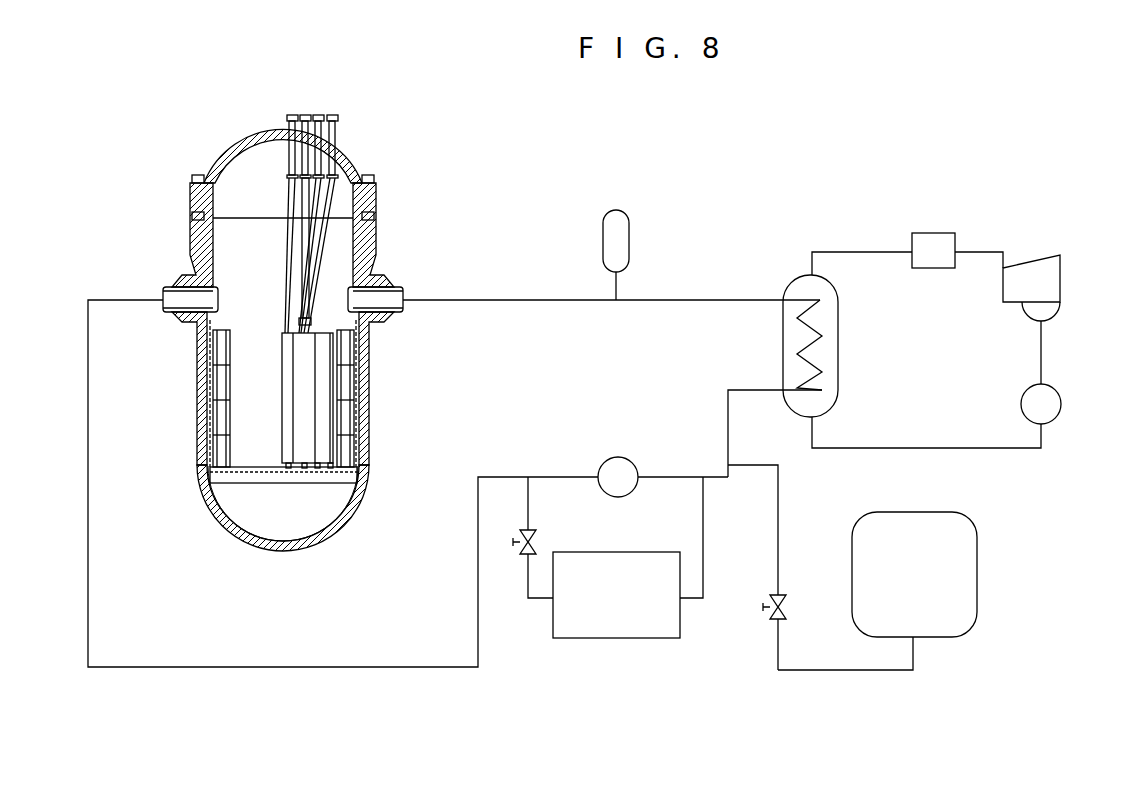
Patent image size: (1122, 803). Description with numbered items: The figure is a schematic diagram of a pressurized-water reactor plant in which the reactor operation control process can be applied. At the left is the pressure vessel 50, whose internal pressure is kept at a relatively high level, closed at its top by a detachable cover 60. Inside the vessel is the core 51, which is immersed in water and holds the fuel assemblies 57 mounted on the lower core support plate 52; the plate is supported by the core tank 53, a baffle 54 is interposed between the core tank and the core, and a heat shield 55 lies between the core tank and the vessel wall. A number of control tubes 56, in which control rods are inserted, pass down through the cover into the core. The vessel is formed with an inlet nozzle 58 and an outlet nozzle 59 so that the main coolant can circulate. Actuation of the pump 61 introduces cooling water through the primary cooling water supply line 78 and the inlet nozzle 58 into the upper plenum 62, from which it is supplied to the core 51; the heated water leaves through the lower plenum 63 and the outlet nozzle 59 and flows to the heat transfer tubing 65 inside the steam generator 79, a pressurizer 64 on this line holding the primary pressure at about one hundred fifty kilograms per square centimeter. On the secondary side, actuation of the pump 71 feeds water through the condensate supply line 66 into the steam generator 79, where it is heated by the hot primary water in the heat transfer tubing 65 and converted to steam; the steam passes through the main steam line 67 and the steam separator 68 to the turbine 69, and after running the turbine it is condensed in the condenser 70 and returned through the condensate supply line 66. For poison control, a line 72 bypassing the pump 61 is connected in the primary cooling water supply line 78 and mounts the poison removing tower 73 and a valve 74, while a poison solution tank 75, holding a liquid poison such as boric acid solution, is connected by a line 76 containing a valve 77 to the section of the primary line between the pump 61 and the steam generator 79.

The pressure vessel 50 is at (220, 523).
The core 51 is at (263, 429).
The lower core support plate 52 is at (257, 473).
The core tank 53 is at (367, 270).
The baffle 54 is at (210, 420).
The heat shield 55 is at (357, 417).
The control tubes 56 is at (285, 297).
The fuel assemblies 57 is at (303, 460).
The inlet nozzle 58 is at (170, 280).
The outlet nozzle 59 is at (400, 287).
The detachable cover 60 is at (355, 180).
The pump 61 is at (608, 460).
The upper plenum 62 is at (223, 235).
The lower plenum 63 is at (340, 510).
The pressurizer 64 is at (629, 243).
The heat transfer tubing 65 is at (822, 328).
The condensate supply line 66 is at (1015, 450).
The main steam line 67 is at (855, 250).
The steam separator 68 is at (957, 240).
The turbine 69 is at (1062, 262).
The condenser 70 is at (1057, 315).
The pump 71 is at (1063, 406).
The line 72 is at (698, 600).
The poison removing tower 73 is at (617, 640).
The valve 74 is at (535, 540).
The poison solution tank 75 is at (976, 545).
The line 76 is at (862, 672).
The valve 77 is at (785, 598).
The primary cooling water supply line 78 is at (233, 668).
The steam generator 79 is at (838, 395).